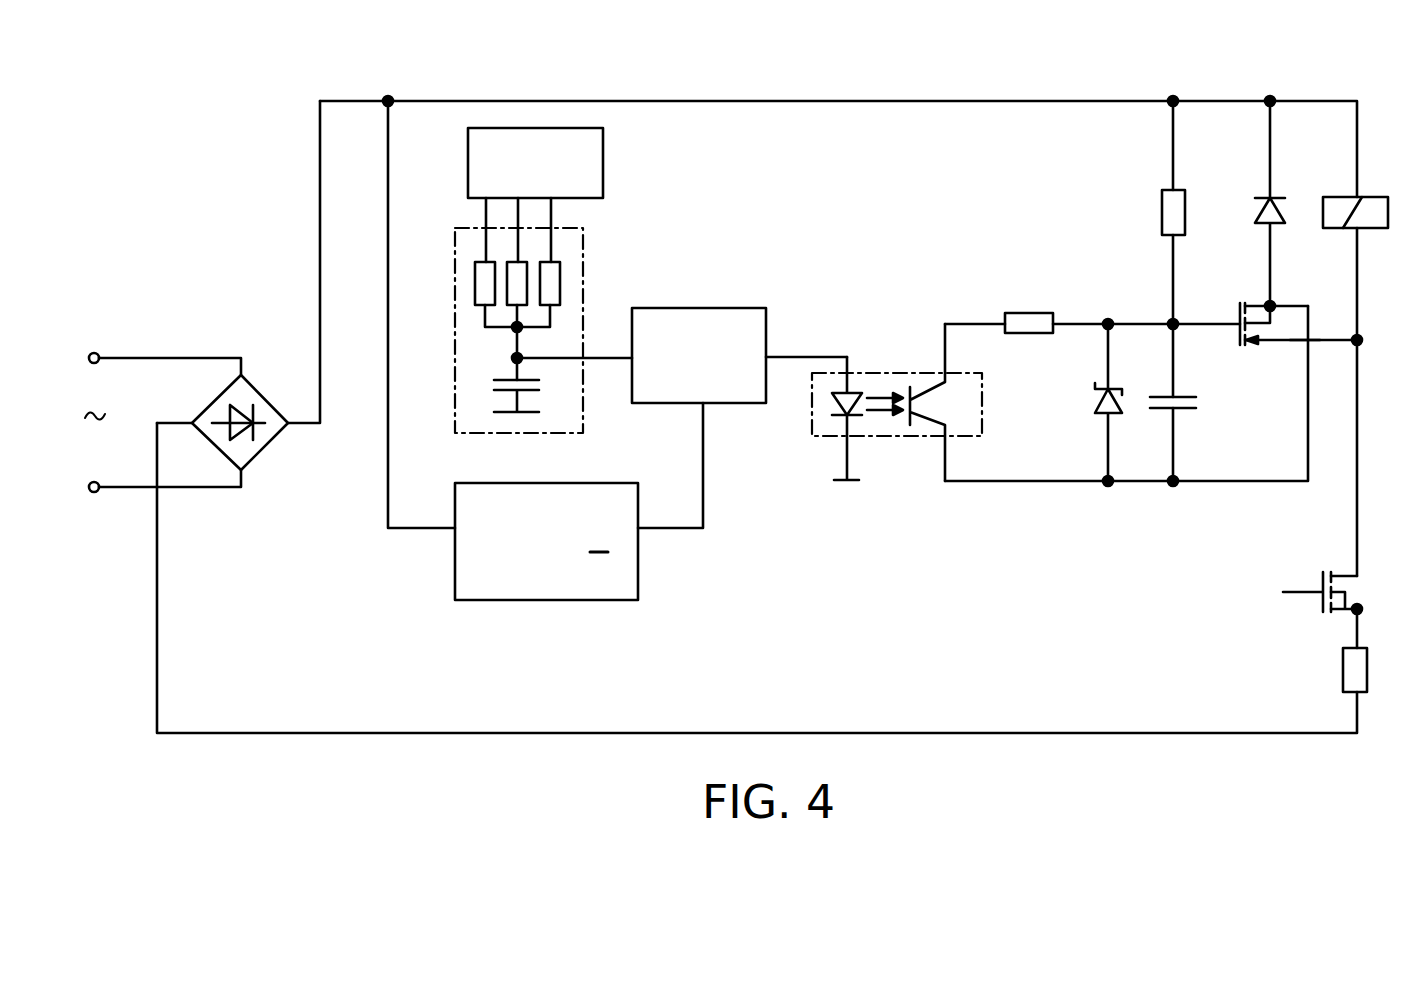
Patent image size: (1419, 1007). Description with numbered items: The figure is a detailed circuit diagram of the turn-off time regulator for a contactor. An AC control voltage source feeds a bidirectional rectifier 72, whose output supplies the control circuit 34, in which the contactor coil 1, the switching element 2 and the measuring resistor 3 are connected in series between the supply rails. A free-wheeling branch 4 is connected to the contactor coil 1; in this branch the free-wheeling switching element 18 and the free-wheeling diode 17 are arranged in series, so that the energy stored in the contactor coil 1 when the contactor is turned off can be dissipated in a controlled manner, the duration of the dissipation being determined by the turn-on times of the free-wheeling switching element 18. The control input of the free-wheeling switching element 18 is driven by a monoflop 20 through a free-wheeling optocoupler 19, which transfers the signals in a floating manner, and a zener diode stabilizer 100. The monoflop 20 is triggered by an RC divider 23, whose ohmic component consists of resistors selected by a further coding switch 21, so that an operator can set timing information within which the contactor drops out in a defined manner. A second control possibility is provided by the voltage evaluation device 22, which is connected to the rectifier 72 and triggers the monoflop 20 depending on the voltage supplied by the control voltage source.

The contactor coil 1 is at (1388, 205).
The switching element 2 is at (1340, 585).
The measuring resistor 3 is at (1367, 670).
The free-wheeling branch 4 is at (1290, 341).
The free-wheeling diode 17 is at (1275, 226).
The free-wheeling switching element 18 is at (1238, 312).
The free-wheeling optocoupler 19 is at (865, 373).
The monoflop 20 is at (700, 308).
The further coding switch 21 is at (603, 160).
The voltage evaluation device 22 is at (513, 600).
The RC divider 23 is at (583, 294).
The control circuit 34 is at (863, 101).
The bidirectional rectifier 72 is at (262, 450).
The zener diode stabilizer 100 is at (1100, 405).